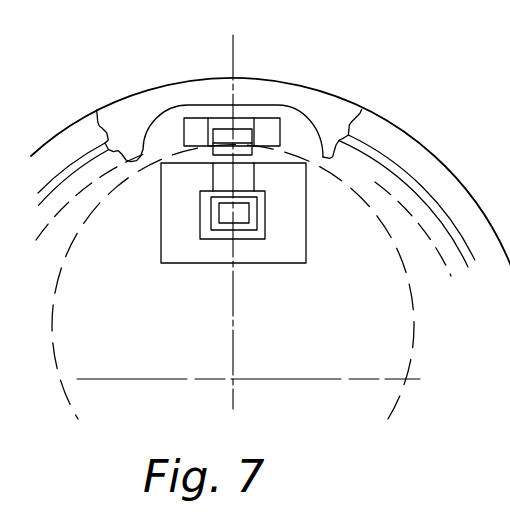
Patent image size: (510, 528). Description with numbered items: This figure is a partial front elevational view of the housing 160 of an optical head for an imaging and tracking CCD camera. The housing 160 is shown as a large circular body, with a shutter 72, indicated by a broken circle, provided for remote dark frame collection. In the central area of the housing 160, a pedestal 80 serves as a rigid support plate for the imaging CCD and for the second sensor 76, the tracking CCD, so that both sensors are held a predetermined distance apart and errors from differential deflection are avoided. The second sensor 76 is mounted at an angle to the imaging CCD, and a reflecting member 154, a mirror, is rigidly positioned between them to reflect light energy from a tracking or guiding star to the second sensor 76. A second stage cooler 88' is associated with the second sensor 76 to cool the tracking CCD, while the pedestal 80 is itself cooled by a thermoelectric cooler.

The shutter 72 is at (55, 334).
The second sensor 76 is at (243, 150).
The pedestal 80 is at (289, 223).
The second stage cooler 88' is at (265, 85).
The reflecting member 154 is at (220, 172).
The housing 160 is at (362, 110).